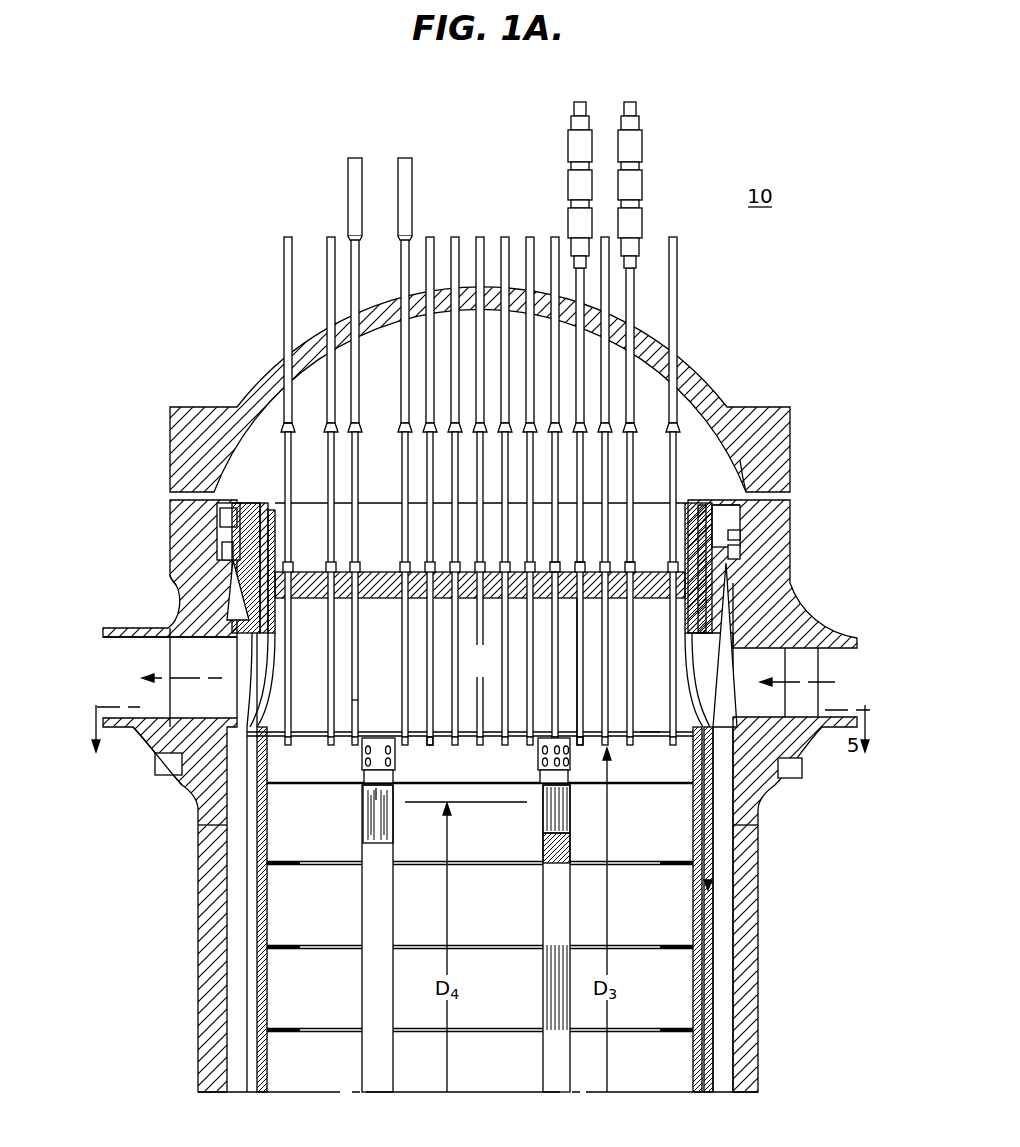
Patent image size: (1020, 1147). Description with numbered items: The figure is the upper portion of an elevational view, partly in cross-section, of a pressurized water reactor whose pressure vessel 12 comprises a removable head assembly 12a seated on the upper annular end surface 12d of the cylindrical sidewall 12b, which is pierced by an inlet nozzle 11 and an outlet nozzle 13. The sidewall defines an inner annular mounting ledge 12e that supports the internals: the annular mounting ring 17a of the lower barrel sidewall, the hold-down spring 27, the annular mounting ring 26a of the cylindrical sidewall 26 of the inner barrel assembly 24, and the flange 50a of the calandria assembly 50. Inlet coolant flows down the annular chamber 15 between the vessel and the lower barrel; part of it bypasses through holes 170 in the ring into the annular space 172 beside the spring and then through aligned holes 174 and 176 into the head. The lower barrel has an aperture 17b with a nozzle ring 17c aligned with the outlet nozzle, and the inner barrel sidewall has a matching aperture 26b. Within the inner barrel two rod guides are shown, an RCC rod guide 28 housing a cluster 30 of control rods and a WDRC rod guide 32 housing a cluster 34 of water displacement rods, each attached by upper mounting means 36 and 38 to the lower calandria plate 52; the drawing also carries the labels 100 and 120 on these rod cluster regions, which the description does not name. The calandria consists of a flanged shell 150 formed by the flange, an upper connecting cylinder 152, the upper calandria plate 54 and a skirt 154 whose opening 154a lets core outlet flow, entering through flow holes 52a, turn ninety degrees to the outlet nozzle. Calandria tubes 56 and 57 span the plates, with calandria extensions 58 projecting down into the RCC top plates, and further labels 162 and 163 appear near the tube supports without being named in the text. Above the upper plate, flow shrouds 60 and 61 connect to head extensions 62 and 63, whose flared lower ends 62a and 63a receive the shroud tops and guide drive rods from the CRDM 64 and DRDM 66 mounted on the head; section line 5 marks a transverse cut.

The inlet nozzle 11 is at (815, 735).
The pressure vessel 12 is at (755, 353).
The head assembly 12a is at (722, 402).
The cylindrical sidewall 12b is at (757, 980).
The upper annular end surface 12d is at (788, 518).
The annular mounting ledge 12e is at (742, 552).
The outlet nozzle 13 is at (157, 753).
The annular chamber 15 is at (709, 929).
The annular mounting ring 17a is at (178, 592).
The aperture 17b is at (200, 790).
The nozzle ring 17c is at (237, 640).
The inner barrel assembly 24 is at (208, 904).
The cylindrical sidewall 26 is at (266, 1052).
The annular mounting ring 26a is at (222, 512).
The aperture 26b is at (265, 698).
The annular hold-down spring 27 is at (224, 548).
The RCC rod guide 28 is at (393, 896).
The cluster of radiation control rods 30 is at (392, 838).
The WDRC rod guide 32 is at (543, 906).
The cluster of water displacement rods 34 is at (538, 847).
The upper mounting means 36 is at (396, 742).
The upper mounting means 38 is at (538, 742).
The section line 5- 5 is at (103, 731).
The calandria assembly 50 is at (467, 671).
The flange 50a is at (266, 502).
The lower calandria plate 52 is at (680, 742).
The flow holes 52a is at (663, 724).
The upper calandria plate 54 is at (322, 572).
The calandria tube 56 is at (637, 665).
The calandria tube 57 is at (400, 712).
The calandria extension 58 is at (432, 746).
The flow shroud 60 is at (640, 492).
The flow shroud 61 is at (405, 462).
The head extension 62 is at (618, 330).
The flared lower end 62a is at (639, 428).
The head extension 63 is at (398, 256).
The flared lower end 63a is at (302, 402).
The control rod cluster displacement mechanism 64 is at (636, 102).
The water displacement rod cluster displacement mechanism 66 is at (411, 158).
The control rod 100 is at (375, 790).
The rod cluster 120 is at (544, 804).
The flanged shell 150 is at (272, 508).
The upper connecting cylinder 152 is at (270, 530).
The lower connecting cylinder 154 is at (274, 605).
The opening 154a is at (272, 648).
The guide tube support 162 is at (612, 576).
The guide tube support 163 is at (530, 562).
The holes 170 is at (756, 598).
The annular space 172 is at (742, 536).
The holes 174 is at (750, 480).
The holes 176 is at (722, 503).